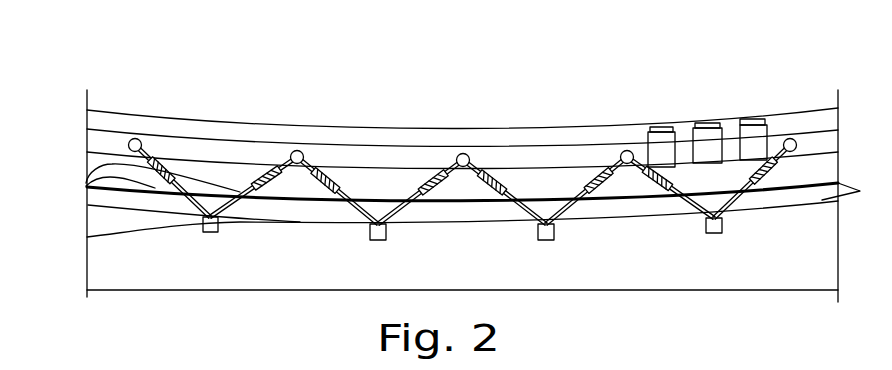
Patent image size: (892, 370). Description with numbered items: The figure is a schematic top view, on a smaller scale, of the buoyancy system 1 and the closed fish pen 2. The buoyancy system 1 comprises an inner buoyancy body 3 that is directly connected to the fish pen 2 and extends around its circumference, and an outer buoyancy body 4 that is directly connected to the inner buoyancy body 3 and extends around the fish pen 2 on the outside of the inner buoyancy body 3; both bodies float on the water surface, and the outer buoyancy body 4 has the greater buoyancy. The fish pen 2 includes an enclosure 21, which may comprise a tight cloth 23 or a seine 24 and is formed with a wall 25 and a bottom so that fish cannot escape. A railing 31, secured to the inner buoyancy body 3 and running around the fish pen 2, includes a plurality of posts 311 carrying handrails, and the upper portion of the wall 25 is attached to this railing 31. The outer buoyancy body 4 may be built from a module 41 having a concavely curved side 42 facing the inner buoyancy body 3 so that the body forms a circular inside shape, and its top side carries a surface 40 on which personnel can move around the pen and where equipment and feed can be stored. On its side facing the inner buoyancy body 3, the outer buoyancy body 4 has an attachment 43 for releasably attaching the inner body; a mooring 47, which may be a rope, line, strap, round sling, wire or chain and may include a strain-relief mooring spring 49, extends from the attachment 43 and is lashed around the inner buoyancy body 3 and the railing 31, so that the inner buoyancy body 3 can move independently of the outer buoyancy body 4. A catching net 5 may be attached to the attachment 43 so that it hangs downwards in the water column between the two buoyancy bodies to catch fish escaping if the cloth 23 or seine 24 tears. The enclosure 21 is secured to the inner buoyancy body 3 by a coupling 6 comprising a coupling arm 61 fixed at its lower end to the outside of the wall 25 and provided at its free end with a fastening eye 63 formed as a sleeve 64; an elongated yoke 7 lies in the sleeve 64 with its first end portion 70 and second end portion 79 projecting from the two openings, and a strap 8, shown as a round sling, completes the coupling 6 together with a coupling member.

The buoyancy system 1 is at (323, 100).
The fish pen 2 is at (462, 118).
The enclosure 21 is at (132, 107).
The tight cloth 23 is at (183, 115).
The seine 24 is at (230, 118).
The wall 25 is at (273, 127).
The inner buoyancy body 3 is at (367, 160).
The railing 31 is at (128, 143).
The posts 311 is at (130, 140).
The mooring 47 is at (450, 157).
The outer buoyancy body 4 is at (133, 257).
The surface 40 is at (470, 277).
The module 41 is at (305, 208).
The concavely curved side 42 is at (213, 275).
The attachment 43 is at (87, 237).
The mooring spring 49 is at (87, 175).
The catching net 5 is at (88, 205).
The coupling 6 is at (707, 93).
The coupling arm 61 is at (653, 128).
The fastening eye 63 is at (660, 126).
The sleeve 64 is at (702, 123).
The yoke 7 is at (716, 124).
The first end portion 70 is at (742, 120).
The second end portion 79 is at (767, 124).
The strap 8 is at (767, 128).